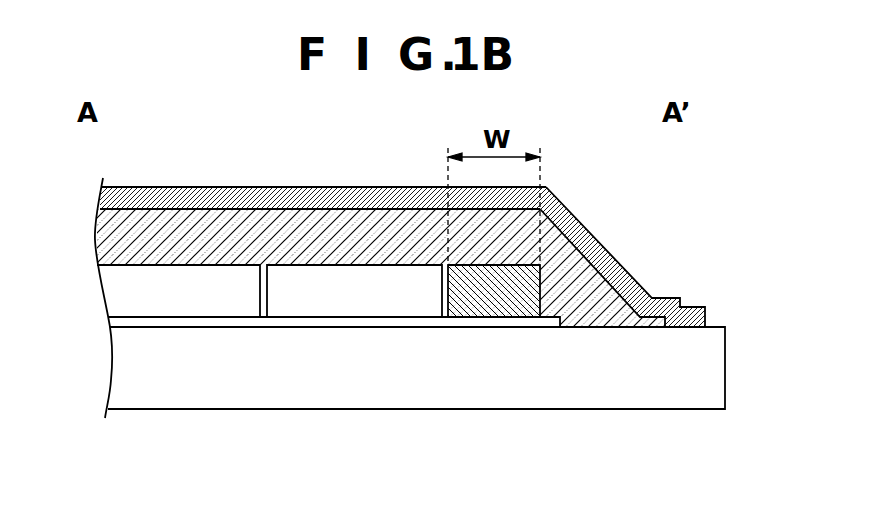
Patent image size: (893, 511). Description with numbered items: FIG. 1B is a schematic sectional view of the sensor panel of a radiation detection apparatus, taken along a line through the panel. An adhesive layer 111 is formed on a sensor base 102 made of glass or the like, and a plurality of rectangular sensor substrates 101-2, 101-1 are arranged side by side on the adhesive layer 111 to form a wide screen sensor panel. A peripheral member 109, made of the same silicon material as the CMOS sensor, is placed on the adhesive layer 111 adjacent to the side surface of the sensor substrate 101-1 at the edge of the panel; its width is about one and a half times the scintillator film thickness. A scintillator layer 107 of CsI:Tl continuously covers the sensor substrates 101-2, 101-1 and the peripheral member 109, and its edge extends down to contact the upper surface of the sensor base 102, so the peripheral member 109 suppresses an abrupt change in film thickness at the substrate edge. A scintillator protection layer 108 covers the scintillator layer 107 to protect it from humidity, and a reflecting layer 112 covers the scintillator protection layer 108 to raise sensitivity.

The sensor base 102 is at (403, 385).
The adhesive layer 111 is at (135, 320).
The sensor substrate 101-2 is at (210, 295).
The sensor substrate 101-1 is at (305, 295).
The peripheral member 109 is at (495, 293).
The scintillator layer 107 is at (183, 230).
The scintillator protection layer 108 is at (290, 202).
The reflecting layer 112 is at (396, 186).